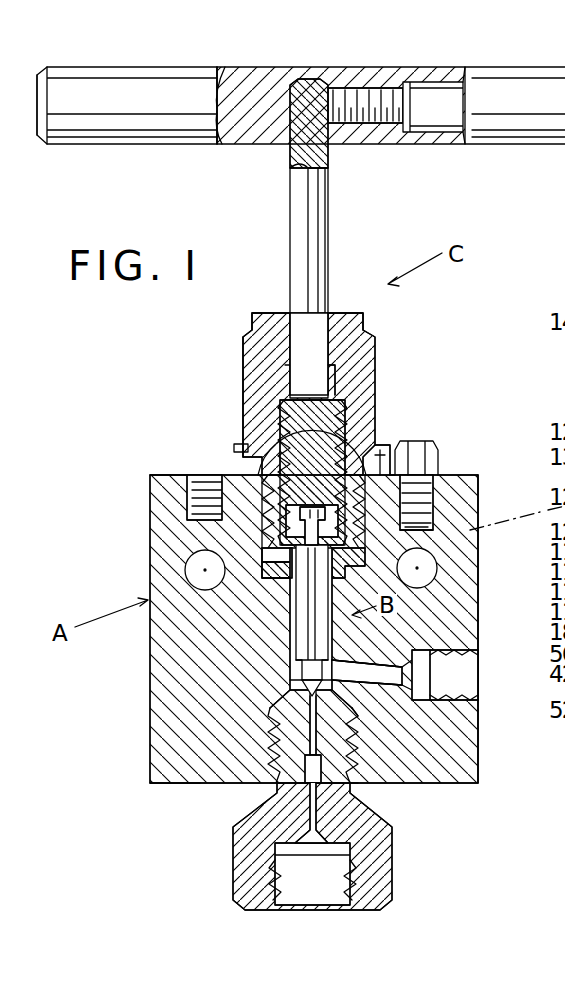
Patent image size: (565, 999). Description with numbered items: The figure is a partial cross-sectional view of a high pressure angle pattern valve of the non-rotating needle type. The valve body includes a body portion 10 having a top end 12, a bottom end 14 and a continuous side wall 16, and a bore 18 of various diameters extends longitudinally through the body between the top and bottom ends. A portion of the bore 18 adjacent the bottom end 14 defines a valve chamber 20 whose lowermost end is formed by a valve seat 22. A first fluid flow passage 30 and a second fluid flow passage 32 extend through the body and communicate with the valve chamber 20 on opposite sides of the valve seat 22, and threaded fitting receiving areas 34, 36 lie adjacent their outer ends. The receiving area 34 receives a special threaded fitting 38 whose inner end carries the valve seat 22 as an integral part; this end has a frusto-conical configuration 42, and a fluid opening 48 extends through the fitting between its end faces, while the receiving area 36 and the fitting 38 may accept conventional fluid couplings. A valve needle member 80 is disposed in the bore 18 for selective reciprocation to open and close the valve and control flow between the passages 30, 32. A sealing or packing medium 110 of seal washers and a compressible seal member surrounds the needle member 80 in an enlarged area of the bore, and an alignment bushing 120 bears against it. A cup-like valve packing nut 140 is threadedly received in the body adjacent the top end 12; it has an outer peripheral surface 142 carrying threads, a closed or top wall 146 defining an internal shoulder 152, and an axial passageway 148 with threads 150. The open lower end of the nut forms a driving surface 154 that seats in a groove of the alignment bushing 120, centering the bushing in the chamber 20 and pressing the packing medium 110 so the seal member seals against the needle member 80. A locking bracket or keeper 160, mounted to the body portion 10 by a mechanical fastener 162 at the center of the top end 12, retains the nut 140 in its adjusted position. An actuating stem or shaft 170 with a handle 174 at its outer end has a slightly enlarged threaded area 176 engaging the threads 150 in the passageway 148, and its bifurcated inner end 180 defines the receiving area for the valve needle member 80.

The body portion 10 is at (158, 680).
The top end 12 is at (158, 474).
The bottom end 14 is at (172, 784).
The continuous side wall 16 is at (460, 600).
The bore 18 is at (284, 683).
The valve chamber 20 is at (340, 658).
The valve seat 22 is at (335, 698).
The first fluid flow passage 30 is at (296, 792).
The second fluid flow passage 32 is at (372, 668).
The threaded fitting receiving area 34 is at (362, 784).
The threaded fitting receiving area 36 is at (460, 660).
The threaded fitting 38 is at (360, 831).
The frusto-conical configuration 42 is at (296, 700).
The fluid opening 48 is at (317, 738).
The valve needle member 80 is at (322, 620).
The sealing or packing medium 110 is at (282, 616).
The alignment bushing 120 is at (265, 572).
The valve packing nut 140 is at (384, 389).
The outer peripheral surface 142 is at (258, 415).
The closed or top wall 146 is at (265, 312).
The axial passageway 148 is at (352, 363).
The threads 150 is at (348, 416).
The internal shoulder 152 is at (366, 341).
The driving surface 154 is at (436, 536).
The locking bracket or keeper 160 is at (380, 456).
The mechanical fastener 162 is at (440, 453).
The actuating stem or shaft 170 is at (322, 232).
The handle 174 is at (497, 68).
The threaded area 176 is at (262, 463).
The bifurcated inner end 180 is at (286, 526).